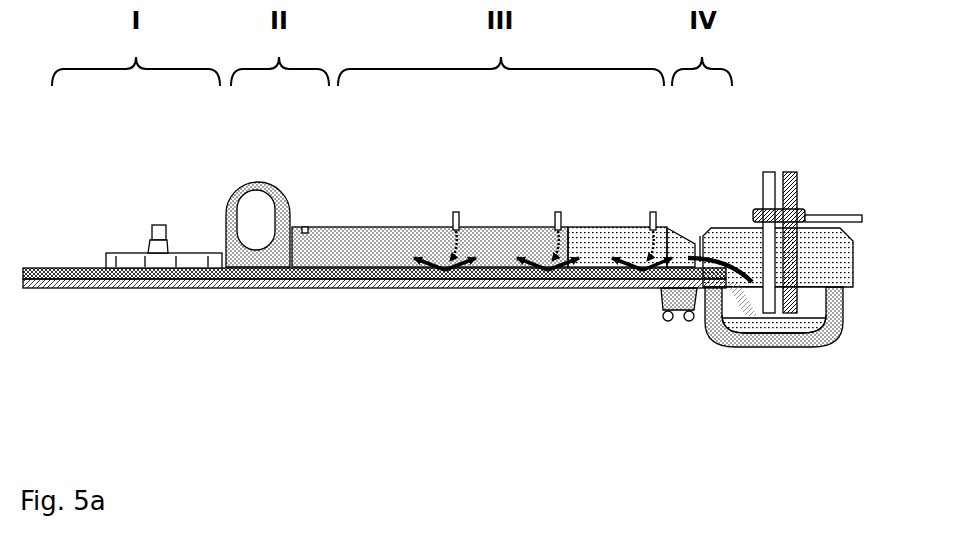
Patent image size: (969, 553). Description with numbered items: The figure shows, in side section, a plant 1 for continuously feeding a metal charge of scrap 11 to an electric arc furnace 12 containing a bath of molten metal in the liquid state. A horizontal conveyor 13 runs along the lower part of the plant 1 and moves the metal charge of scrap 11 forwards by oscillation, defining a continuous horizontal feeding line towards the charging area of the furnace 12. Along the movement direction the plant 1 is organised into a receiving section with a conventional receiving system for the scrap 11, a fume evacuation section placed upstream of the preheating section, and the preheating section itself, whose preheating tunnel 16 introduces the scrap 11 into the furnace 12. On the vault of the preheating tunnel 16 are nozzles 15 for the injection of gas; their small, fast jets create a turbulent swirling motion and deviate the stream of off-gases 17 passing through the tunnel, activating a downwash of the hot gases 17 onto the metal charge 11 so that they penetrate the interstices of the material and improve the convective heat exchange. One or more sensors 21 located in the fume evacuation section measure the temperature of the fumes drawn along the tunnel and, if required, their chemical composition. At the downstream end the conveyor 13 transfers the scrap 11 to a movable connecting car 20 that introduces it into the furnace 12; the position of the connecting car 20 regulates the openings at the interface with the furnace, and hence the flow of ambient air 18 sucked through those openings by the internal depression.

The plant 1 is at (407, 326).
The metal charge of scrap 11 is at (333, 268).
The electric arc furnace 12 is at (732, 338).
The horizontal conveyor 13 is at (90, 282).
The nozzles 15 is at (456, 212).
The preheating tunnel 16 is at (520, 242).
The off-gases 17 is at (672, 318).
The flow of ambient air 18 is at (698, 232).
The connecting car 20 is at (689, 312).
The sensors 21 is at (305, 227).